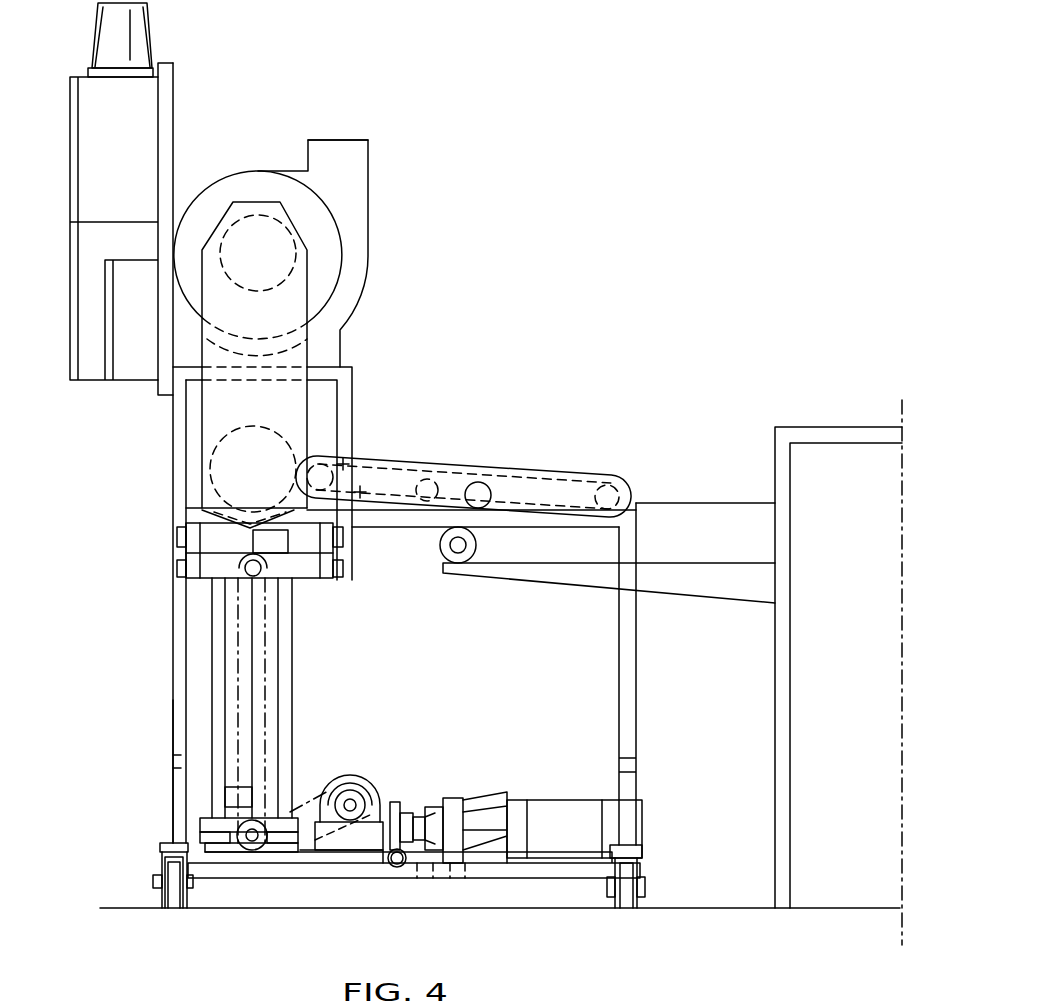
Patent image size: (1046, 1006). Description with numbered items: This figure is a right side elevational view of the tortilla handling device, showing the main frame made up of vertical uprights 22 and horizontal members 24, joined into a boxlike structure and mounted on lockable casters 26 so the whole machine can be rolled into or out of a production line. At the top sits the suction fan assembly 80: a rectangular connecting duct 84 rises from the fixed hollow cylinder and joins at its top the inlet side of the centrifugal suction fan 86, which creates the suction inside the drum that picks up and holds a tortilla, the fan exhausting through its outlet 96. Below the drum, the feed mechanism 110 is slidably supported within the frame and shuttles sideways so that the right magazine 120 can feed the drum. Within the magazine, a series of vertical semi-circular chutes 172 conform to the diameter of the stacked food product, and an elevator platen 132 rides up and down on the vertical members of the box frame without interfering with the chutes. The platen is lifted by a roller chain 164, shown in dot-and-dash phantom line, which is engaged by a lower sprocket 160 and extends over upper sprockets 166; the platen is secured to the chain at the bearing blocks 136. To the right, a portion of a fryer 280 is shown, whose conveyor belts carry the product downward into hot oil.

The uprights 22 is at (350, 410).
The horizontal members 24 is at (325, 370).
The casters 26 is at (157, 888).
The suction fan assembly 80 is at (368, 195).
The connecting duct 84 is at (215, 412).
The suction fan 86 is at (287, 170).
The outlet 96 is at (358, 140).
The feed mechanism 110 is at (293, 698).
The right magazine 120 is at (247, 618).
The elevator platen 132 is at (148, 790).
The bearing blocks 136 is at (200, 820).
The sprocket 160 is at (263, 847).
The roller chain 164 is at (265, 723).
The upper sprockets 166 is at (273, 580).
The semi-circular chutes 172 is at (273, 643).
The fryer 280 is at (803, 432).